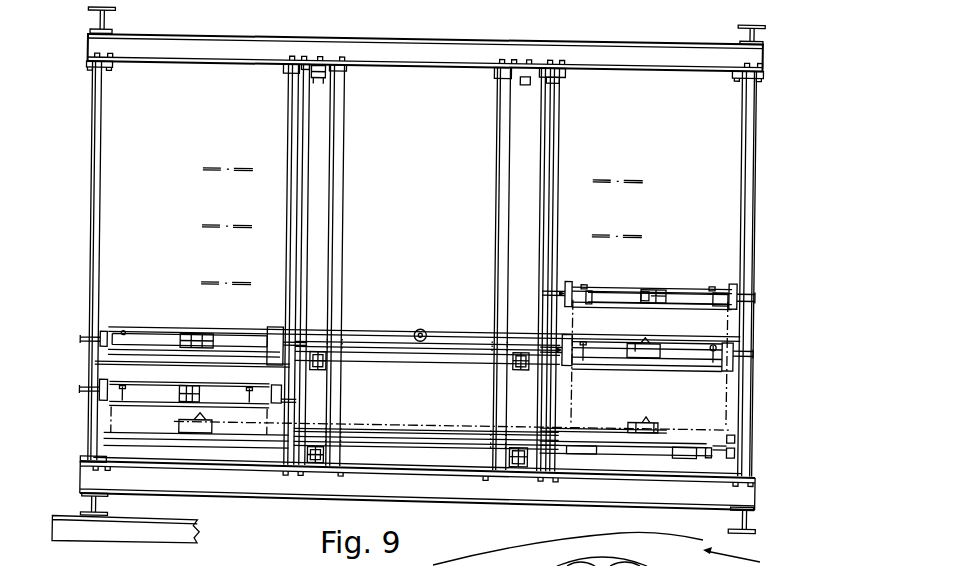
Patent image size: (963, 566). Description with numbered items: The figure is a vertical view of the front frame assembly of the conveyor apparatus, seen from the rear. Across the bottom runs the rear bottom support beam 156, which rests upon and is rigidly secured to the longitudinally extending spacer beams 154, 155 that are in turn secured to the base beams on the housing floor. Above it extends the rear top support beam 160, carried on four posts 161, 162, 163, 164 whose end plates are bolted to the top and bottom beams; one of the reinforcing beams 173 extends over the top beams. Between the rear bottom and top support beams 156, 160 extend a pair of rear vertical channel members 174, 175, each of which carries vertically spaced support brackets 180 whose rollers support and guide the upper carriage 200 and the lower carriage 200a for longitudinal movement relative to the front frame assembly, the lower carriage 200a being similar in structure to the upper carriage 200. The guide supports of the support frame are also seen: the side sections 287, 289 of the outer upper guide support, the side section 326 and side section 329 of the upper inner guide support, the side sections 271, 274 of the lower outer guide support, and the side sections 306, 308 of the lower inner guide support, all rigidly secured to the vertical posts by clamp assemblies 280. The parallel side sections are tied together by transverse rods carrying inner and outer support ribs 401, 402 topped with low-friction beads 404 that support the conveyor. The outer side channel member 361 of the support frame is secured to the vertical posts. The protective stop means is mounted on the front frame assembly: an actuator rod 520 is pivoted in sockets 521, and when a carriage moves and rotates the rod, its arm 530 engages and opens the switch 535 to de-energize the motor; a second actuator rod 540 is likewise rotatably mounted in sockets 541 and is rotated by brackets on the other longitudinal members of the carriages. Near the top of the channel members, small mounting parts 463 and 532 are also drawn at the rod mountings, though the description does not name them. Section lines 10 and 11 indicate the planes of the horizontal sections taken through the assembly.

The rear top support beam 160 is at (415, 27).
The reinforcing beam 173 is at (105, 17).
The rear vertical channel member 174 is at (755, 23).
The post 161 is at (92, 158).
The post 162 is at (298, 153).
The actuator rod 520 is at (301, 184).
The socket 521 is at (292, 68).
The arm 530 is at (327, 74).
The switch 535 is at (318, 76).
The rear vertical channel member 175 is at (502, 198).
The bracket 463 is at (522, 74).
The second actuator rod 540 is at (545, 139).
The post 163 is at (563, 132).
The socket 541 is at (549, 64).
The bracket 532 is at (553, 76).
The post 164 is at (758, 141).
The section line 10- 10 is at (56, 334).
The section line 11- 11 is at (57, 395).
The upper carriage 200 is at (437, 360).
The lower carriage 200a is at (438, 447).
The side section 287 is at (118, 325).
The side section 326 is at (272, 352).
The longitudinal side section 271 is at (118, 383).
The side section 306 is at (280, 422).
The support bracket 180 is at (332, 365).
The side section 329 is at (571, 279).
The bead 404 is at (595, 282).
The side section 289 is at (739, 268).
The inner support rib 401 is at (595, 300).
The outer support rib 402 is at (718, 300).
The side section 308 is at (577, 360).
The side section 274 is at (733, 362).
The clamp assembly 280 is at (762, 342).
The outer side channel member 361 is at (745, 430).
The rear bottom support beam 156 is at (509, 494).
The spacer beam 155 is at (95, 497).
The spacer beam 154 is at (762, 505).